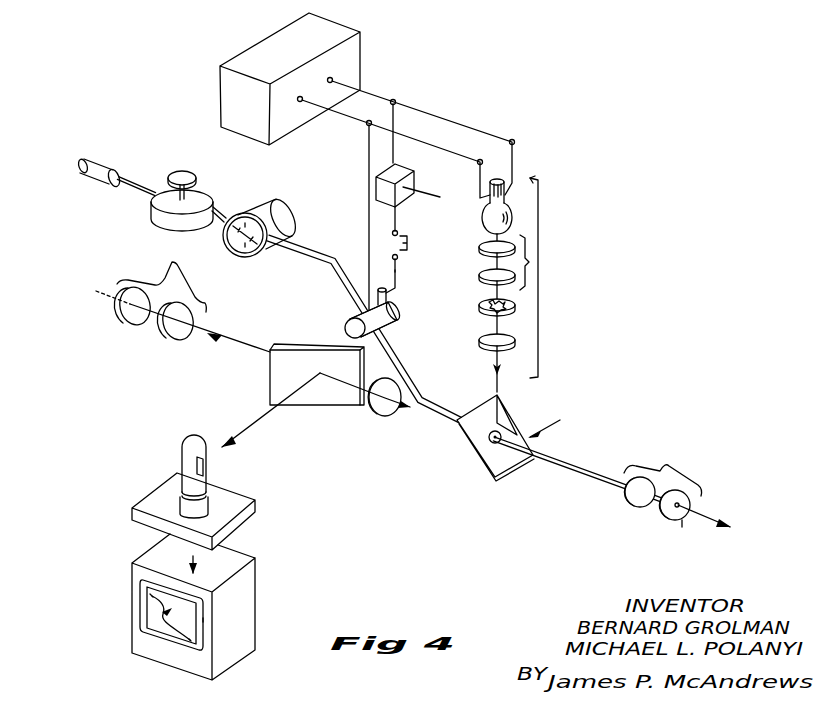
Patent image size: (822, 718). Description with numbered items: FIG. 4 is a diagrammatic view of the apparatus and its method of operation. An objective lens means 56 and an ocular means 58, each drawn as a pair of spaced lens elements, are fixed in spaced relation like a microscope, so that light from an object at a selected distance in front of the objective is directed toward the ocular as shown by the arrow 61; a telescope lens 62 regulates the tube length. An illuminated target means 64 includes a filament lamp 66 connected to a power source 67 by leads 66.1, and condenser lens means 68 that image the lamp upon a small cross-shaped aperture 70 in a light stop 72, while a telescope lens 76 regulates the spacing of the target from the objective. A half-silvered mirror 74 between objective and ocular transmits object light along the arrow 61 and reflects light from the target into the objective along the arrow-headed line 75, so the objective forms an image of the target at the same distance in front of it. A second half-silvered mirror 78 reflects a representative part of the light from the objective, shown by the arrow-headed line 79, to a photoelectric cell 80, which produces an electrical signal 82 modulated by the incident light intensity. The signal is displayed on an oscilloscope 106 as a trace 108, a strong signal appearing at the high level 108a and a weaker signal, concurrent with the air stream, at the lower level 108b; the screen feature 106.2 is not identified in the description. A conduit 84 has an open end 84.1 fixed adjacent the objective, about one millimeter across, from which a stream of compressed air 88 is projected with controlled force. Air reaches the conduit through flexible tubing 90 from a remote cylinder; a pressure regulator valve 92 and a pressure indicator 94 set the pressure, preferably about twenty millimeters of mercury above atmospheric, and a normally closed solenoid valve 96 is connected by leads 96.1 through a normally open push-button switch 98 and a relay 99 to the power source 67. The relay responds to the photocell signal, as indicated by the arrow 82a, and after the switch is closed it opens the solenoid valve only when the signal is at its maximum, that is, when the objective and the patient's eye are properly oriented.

The power source 67 is at (347, 57).
The leads 66.1 is at (460, 153).
The arrow indicating relay response to signal 82a is at (440, 197).
The relay 99 is at (407, 204).
The push-button switch 98 is at (409, 242).
The leads 96.1 is at (398, 270).
The filament lamp 66 is at (507, 206).
The condenser lens means 68 is at (529, 262).
The illuminated target means 64 is at (538, 267).
The cross-shaped aperture 70 is at (482, 303).
The light stop 72 is at (516, 310).
The telescope lens 76 is at (478, 346).
The tubing 90 is at (97, 167).
The pressure regulator valve 92 is at (166, 190).
The pressure indicator 94 is at (280, 202).
The ocular means 58 is at (175, 262).
The arrow 61 is at (216, 333).
The half-silvered mirror 78 is at (300, 347).
The arrow-headed line 79 is at (263, 420).
The solenoid valve 96 is at (395, 315).
The telescope lens 62 is at (388, 417).
The photoelectric cell 80 is at (184, 440).
The electrical signal 82 is at (193, 556).
The oscilloscope 106 is at (247, 593).
The trace 108 is at (140, 627).
The trace portion 108a is at (153, 597).
The trace portion 108b is at (190, 641).
The window frame 106.2 is at (205, 620).
The arrow-headed line 75 is at (540, 430).
The half-silvered mirror 74 is at (510, 470).
The conduit 84 is at (583, 460).
The objective lens means 56 is at (669, 466).
The stream of fluid 88 is at (708, 513).
The open end 84.1 is at (682, 527).